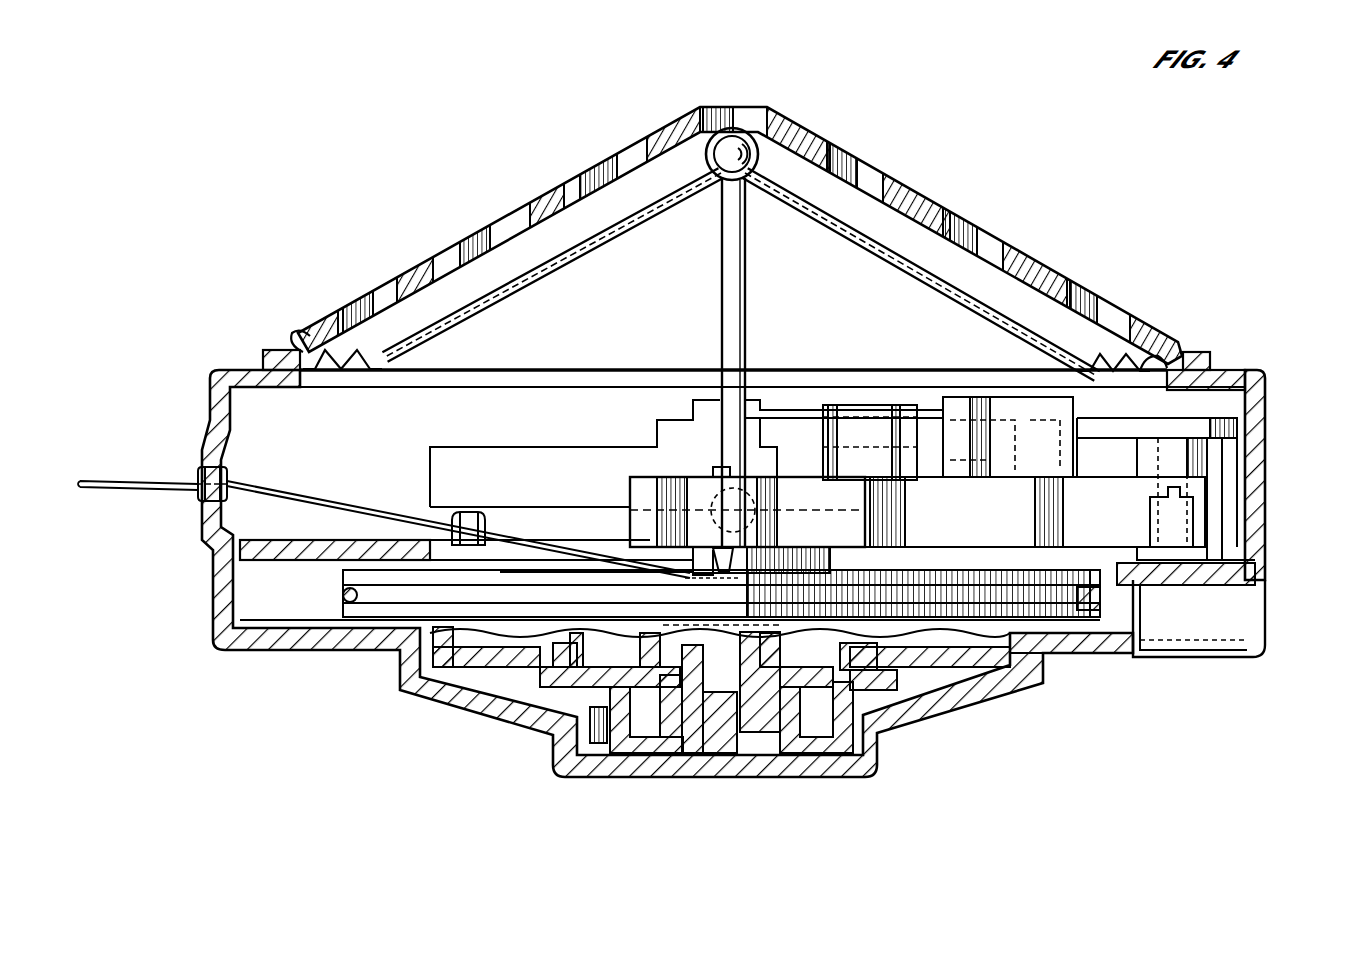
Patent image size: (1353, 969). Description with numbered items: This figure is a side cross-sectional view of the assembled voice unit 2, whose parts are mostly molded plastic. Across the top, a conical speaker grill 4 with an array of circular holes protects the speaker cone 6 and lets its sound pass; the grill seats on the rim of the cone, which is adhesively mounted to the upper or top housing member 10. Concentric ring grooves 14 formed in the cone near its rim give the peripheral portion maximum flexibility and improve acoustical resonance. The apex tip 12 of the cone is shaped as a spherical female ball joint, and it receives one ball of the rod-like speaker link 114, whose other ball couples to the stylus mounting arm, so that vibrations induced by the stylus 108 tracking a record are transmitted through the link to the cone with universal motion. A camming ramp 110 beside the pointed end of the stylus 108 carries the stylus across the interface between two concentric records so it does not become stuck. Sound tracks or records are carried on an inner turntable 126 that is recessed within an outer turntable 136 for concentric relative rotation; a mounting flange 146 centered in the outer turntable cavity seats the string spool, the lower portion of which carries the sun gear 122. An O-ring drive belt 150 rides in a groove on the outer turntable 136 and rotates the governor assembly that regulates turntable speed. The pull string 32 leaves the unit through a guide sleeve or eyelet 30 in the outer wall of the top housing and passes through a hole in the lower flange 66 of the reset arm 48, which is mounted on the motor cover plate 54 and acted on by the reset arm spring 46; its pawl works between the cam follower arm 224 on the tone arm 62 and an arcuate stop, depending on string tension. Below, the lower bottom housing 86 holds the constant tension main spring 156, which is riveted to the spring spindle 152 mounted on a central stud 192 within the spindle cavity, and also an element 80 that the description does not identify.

The voice unit 2 is at (405, 148).
The speaker grill 4 is at (556, 180).
The speaker cone 6 is at (835, 212).
The upper or top housing member 10 is at (224, 368).
The apex tip 12 is at (770, 128).
The concentric ring grooves 14 is at (323, 350).
The guide sleeve or eyelet 30 is at (195, 466).
The pull string 32 is at (112, 487).
The reset arm spring 46 is at (786, 400).
The reset arm 48 is at (450, 447).
The motor cover plate 54 is at (270, 535).
The tone arm 62 is at (645, 478).
The lower flange 66 is at (448, 528).
The end compartment 80 is at (1266, 520).
The lower bottom housing 86 is at (1090, 655).
The stylus 108 is at (748, 575).
The camming ramp 110 is at (700, 560).
The speaker link 114 is at (722, 272).
The sun gear 122 is at (650, 735).
The inner turntable 126 is at (880, 722).
The outer turntable 136 is at (995, 660).
The mounting flange 146 is at (728, 735).
The O-ring drive belt 150 is at (343, 595).
The spring spindle 152 is at (845, 742).
The main spring 156 is at (590, 727).
The stud 192 is at (705, 740).
The cam follower arm 224 is at (962, 395).